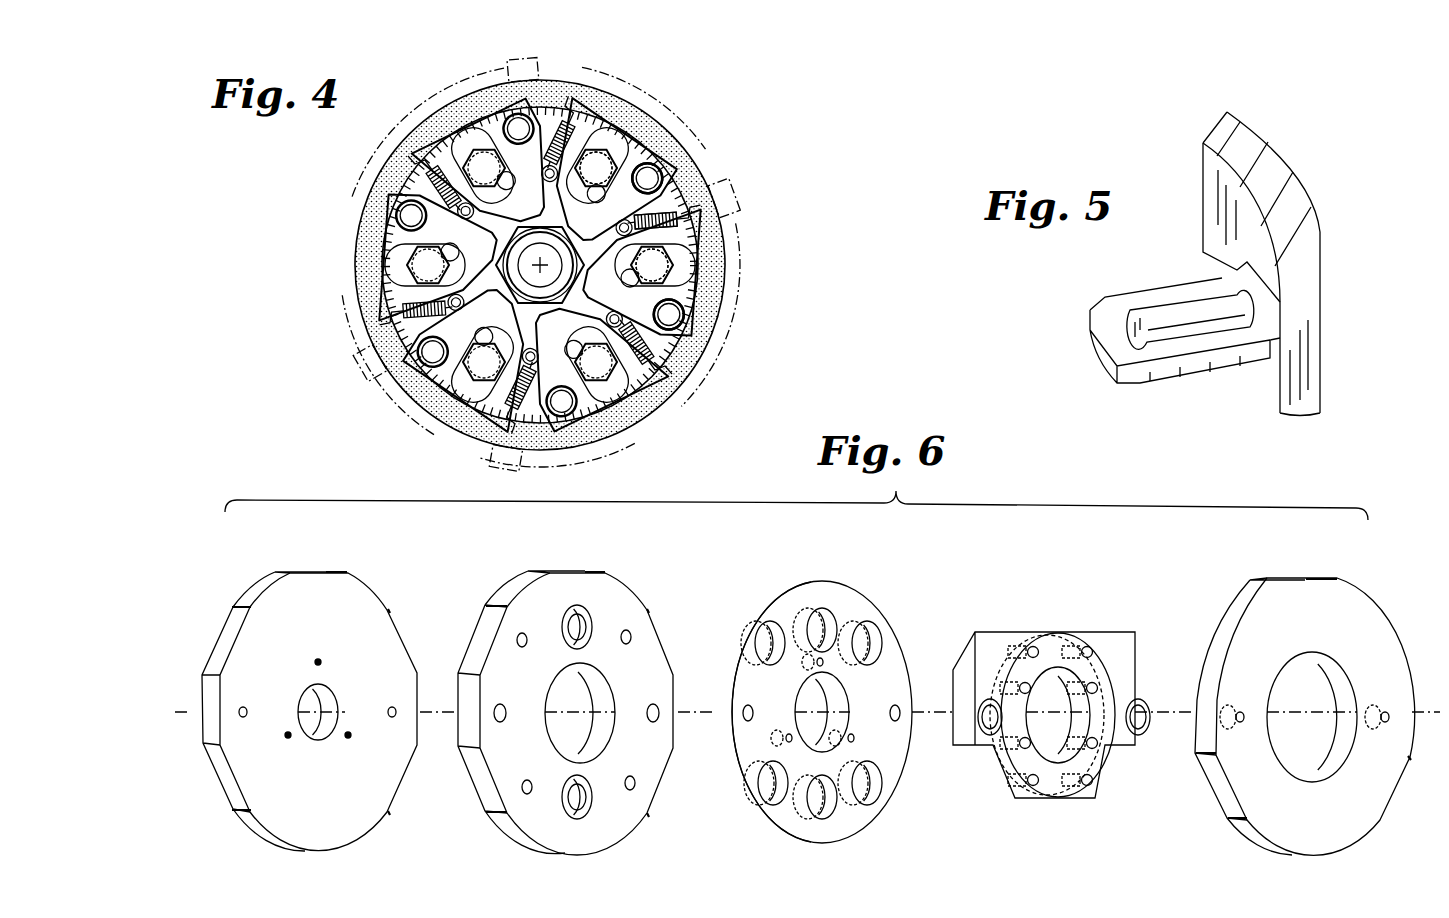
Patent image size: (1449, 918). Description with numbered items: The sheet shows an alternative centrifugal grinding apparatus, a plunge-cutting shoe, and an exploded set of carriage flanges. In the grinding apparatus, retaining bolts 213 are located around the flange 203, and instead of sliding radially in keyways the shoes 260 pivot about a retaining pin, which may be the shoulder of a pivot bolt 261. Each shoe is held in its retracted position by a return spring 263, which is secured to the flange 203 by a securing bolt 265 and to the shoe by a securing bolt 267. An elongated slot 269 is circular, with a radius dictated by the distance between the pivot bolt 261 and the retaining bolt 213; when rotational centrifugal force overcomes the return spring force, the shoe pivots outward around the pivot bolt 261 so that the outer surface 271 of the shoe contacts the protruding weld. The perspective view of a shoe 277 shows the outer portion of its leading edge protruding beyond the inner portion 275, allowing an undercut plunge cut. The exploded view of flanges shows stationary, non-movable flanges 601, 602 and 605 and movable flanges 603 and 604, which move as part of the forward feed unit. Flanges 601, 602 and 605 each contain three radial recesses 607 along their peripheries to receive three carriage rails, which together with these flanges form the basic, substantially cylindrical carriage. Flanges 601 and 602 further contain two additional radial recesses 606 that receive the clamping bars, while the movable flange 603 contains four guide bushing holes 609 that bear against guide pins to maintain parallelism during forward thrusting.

In FIG. 4, the flange 203 is at (535, 90).
In FIG. 4, the retaining bolt 213 is at (598, 165).
In FIG. 4, the securing bolt 265 is at (650, 180).
In FIG. 4, the return spring 263 is at (681, 186).
In FIG. 4, the securing bolt 267 is at (723, 198).
In FIG. 4, the elongated slot 269 is at (684, 261).
In FIG. 4, the shoe 260 is at (593, 236).
In FIG. 4, the pivot bolt 261 is at (668, 315).
In FIG. 4, the outer surface 271 is at (392, 352).
In FIG. 5, the inner portion 275 is at (1203, 145).
In FIG. 5, the shoe 277 is at (1225, 112).
In FIG. 6, the flange 601 is at (352, 572).
In FIG. 6, the flange 602 is at (610, 572).
In FIG. 6, the movable flange 603 is at (841, 695).
In FIG. 6, the movable flange 604 is at (1058, 633).
In FIG. 6, the flange 605 is at (1355, 580).
In FIG. 6, the radial recess 606 is at (228, 635).
In FIG. 6, the radial recess 607 is at (315, 572).
In FIG. 6, the guide bushing hole 609 is at (905, 842).